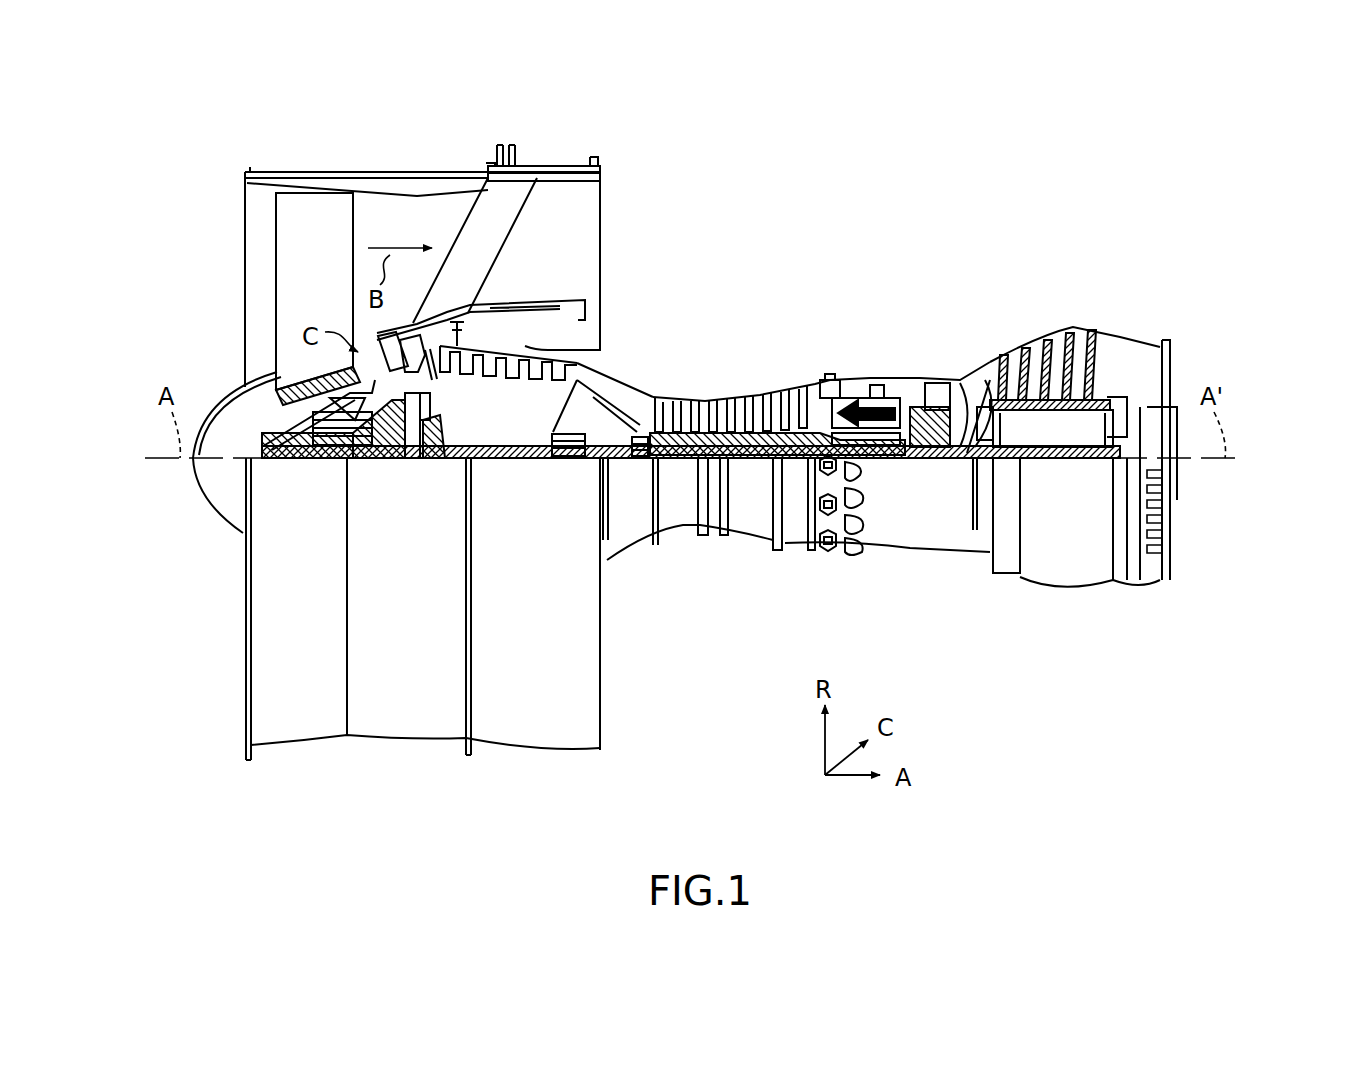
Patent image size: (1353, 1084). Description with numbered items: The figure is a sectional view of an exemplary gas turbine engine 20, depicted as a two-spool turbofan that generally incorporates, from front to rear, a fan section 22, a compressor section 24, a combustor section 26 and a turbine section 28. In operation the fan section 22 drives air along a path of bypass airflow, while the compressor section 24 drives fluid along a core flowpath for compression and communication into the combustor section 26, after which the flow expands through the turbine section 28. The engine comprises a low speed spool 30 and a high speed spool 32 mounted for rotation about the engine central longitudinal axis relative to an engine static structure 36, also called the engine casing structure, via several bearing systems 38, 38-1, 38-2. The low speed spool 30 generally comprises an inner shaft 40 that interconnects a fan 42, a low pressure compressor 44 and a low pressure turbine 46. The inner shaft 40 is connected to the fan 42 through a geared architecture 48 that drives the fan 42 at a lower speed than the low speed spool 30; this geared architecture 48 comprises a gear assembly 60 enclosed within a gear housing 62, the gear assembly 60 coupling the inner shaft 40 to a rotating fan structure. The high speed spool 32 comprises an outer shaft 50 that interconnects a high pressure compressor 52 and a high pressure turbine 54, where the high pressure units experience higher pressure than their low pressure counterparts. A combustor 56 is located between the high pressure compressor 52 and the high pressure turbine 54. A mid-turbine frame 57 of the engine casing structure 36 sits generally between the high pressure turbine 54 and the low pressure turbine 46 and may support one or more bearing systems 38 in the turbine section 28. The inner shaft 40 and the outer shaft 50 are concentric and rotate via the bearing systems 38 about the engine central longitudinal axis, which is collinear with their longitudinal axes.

The gas turbine engine 20 is at (912, 172).
The fan section 22 is at (448, 158).
The compressor section 24 is at (826, 266).
The combustor section 26 is at (922, 266).
The turbine section 28 is at (1120, 260).
The low speed spool 30 is at (758, 470).
The high speed spool 32 is at (803, 405).
The engine static structure 36 is at (220, 770).
The bearing system 38 is at (980, 470).
The bearing system 38-1 is at (318, 462).
The bearing system 38-2 is at (555, 462).
The inner shaft 40 is at (622, 462).
The fan 42 is at (321, 301).
The low pressure compressor 44 is at (545, 362).
The low pressure turbine 46 is at (1062, 328).
The geared architecture 48 is at (428, 495).
The outer shaft 50 is at (873, 460).
The high pressure compressor 52 is at (763, 418).
The high pressure turbine 54 is at (930, 380).
The combustor 56 is at (852, 400).
The mid-turbine frame 57 is at (968, 417).
The gear assembly 60 is at (448, 432).
The gear housing 62 is at (448, 409).